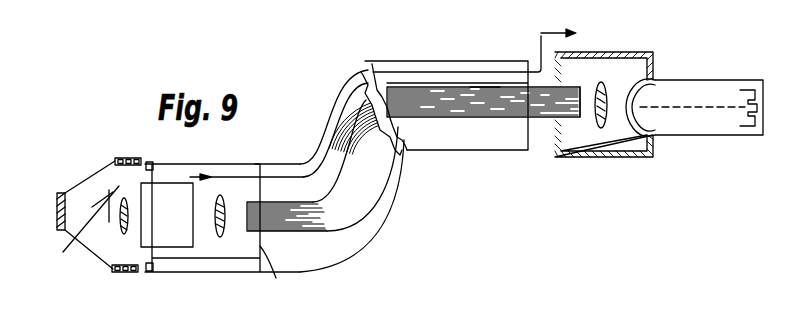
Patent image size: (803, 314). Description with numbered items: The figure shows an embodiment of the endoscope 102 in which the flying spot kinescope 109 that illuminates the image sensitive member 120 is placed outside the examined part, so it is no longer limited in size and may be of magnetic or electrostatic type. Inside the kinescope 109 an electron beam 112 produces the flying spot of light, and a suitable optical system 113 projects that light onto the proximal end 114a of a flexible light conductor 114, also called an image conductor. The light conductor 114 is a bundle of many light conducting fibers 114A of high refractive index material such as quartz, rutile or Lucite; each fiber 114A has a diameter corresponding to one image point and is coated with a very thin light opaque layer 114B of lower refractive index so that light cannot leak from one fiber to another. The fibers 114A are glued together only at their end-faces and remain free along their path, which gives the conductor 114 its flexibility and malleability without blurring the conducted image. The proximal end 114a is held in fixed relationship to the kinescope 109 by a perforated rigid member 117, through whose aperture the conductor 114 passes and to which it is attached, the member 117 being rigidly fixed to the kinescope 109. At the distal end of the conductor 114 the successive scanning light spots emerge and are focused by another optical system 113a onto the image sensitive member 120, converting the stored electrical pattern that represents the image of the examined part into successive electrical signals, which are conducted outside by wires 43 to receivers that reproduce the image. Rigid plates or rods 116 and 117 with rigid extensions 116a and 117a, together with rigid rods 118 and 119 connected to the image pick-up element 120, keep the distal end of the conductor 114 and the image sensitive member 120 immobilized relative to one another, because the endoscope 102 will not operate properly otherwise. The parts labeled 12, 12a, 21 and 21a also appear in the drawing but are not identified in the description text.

The focusing electrodes 12 is at (114, 161).
The photocathode 12a is at (57, 211).
The image light 21 is at (112, 223).
The light ray 21a is at (63, 252).
The rigid rod 118 is at (149, 162).
The rigid rod 119 is at (148, 271).
The image sensitive member 120 is at (160, 183).
The rigid plate or rod 116 is at (216, 177).
The rigid extension 116a is at (259, 177).
The endoscope 102 is at (279, 183).
The perforated rigid member 117 is at (194, 258).
The rigid extension 117a is at (278, 276).
The optical system 113a is at (220, 238).
The light opaque layer 114B is at (329, 236).
The light conducting fiber 114A is at (486, 118).
The light conductor 114 is at (509, 123).
The proximal end 114a is at (581, 98).
The optical system 113 is at (606, 128).
The wires 43 is at (541, 33).
The kinescope 109 is at (687, 92).
The electron beam 112 is at (708, 108).